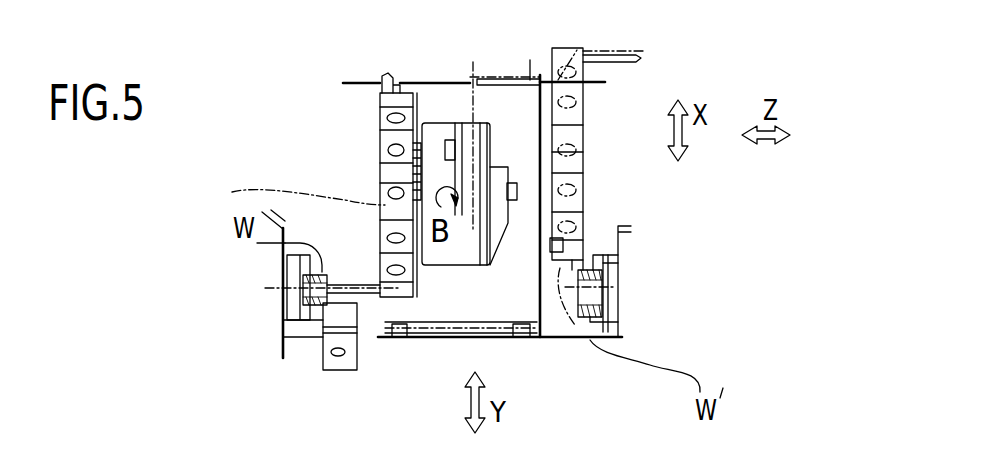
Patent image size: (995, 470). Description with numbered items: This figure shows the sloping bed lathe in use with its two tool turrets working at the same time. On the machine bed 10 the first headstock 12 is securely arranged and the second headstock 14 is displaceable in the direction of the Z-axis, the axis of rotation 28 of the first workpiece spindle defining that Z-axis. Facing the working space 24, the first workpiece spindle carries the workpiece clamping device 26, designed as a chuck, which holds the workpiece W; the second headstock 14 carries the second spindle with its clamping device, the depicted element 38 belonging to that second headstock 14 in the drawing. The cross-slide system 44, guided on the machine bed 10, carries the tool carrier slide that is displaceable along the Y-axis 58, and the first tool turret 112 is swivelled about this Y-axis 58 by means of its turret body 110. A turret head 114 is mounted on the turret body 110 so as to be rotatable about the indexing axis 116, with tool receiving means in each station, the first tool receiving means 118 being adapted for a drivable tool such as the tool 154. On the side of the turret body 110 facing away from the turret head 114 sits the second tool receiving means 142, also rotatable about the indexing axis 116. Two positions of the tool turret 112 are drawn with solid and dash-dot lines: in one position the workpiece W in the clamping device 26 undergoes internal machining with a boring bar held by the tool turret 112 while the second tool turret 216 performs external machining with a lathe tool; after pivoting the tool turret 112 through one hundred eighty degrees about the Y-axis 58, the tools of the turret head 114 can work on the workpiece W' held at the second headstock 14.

The machine bed 10 is at (520, 368).
The first headstock 12 is at (270, 355).
The second headstock 14 is at (640, 283).
The working space 24 is at (652, 76).
The workpiece clamping device 26 is at (285, 300).
The axis of rotation 28 is at (268, 288).
The bracket 38 is at (606, 262).
The cross-slide system 44 is at (352, 72).
The Y-axis 58 is at (500, 130).
The turret body 110 is at (436, 124).
The tool turret 112 is at (365, 180).
The turret head 114 is at (380, 118).
The indexing axis 116 is at (290, 193).
The first tool receiving means 118 is at (380, 150).
The second tool receiving means 142 is at (553, 160).
The tool 154 is at (355, 288).
The tool turret 216 is at (330, 362).